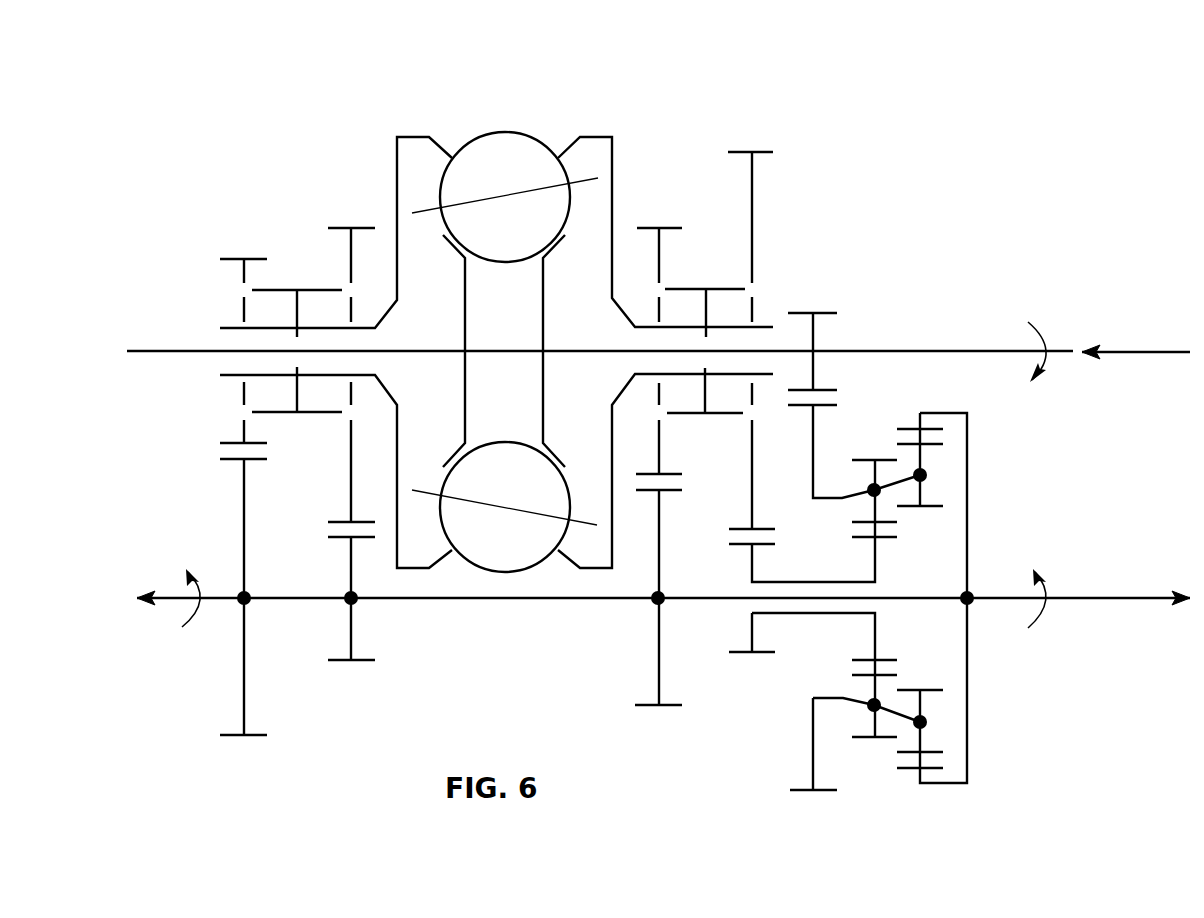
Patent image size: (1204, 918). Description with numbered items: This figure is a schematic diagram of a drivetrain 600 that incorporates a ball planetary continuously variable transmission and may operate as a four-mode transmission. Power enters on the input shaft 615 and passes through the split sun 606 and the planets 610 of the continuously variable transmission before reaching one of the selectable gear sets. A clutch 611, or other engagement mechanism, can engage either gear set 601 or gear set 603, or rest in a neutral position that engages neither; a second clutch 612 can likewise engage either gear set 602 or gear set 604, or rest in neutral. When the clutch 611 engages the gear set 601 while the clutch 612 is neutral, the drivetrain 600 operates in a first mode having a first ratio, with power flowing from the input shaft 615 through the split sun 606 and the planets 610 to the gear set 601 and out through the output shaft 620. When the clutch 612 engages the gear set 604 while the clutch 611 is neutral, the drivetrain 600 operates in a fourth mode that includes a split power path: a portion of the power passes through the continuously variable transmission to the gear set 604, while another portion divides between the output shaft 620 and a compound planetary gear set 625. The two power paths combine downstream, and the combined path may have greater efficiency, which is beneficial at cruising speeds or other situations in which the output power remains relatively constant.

The drivetrain 600 is at (1012, 158).
The gear set 601 is at (235, 258).
The gear set 602 is at (673, 228).
The gear set 603 is at (340, 228).
The gear set 604 is at (762, 151).
The split sun 606 is at (556, 307).
The planets 610 is at (507, 132).
The clutch 611 is at (285, 290).
The clutch 612 is at (717, 288).
The input shaft 615 is at (900, 350).
The output shaft 620 is at (997, 600).
The planetary gear set 625 is at (1004, 444).